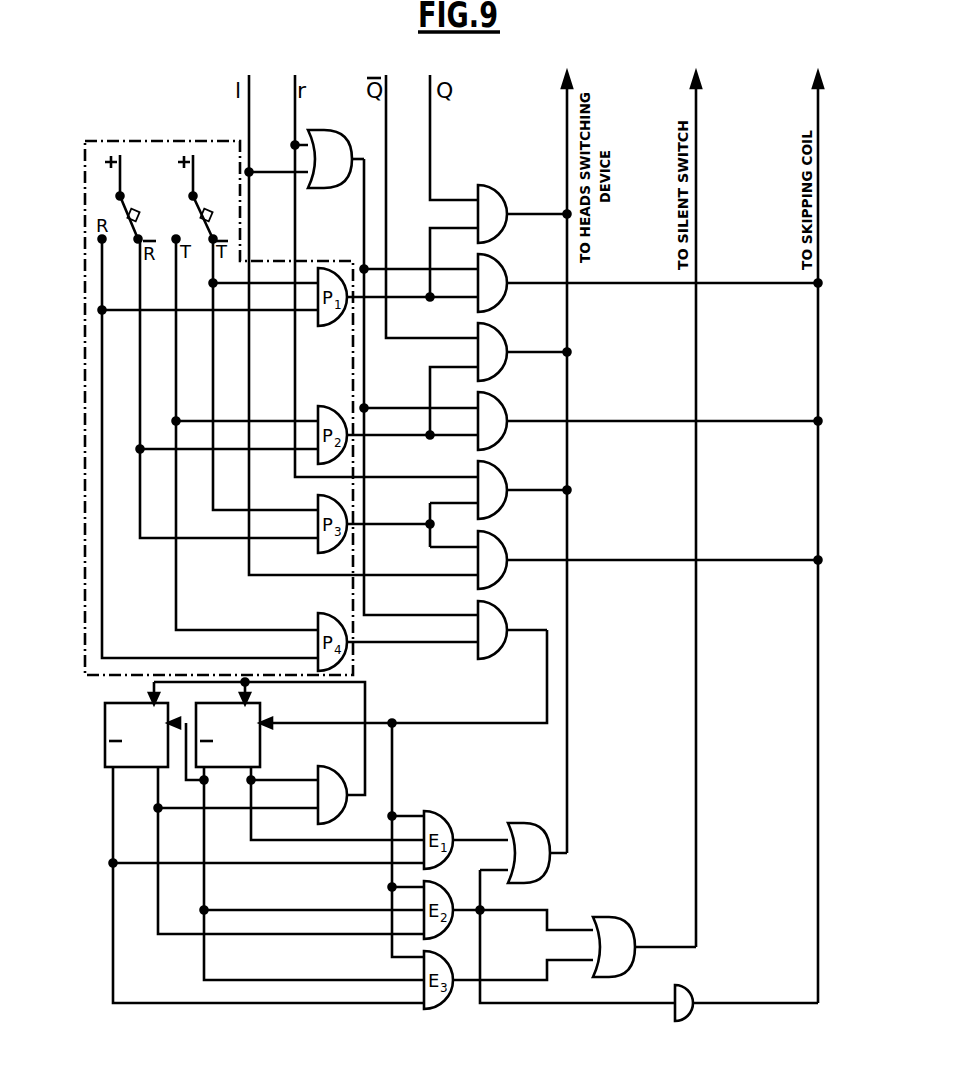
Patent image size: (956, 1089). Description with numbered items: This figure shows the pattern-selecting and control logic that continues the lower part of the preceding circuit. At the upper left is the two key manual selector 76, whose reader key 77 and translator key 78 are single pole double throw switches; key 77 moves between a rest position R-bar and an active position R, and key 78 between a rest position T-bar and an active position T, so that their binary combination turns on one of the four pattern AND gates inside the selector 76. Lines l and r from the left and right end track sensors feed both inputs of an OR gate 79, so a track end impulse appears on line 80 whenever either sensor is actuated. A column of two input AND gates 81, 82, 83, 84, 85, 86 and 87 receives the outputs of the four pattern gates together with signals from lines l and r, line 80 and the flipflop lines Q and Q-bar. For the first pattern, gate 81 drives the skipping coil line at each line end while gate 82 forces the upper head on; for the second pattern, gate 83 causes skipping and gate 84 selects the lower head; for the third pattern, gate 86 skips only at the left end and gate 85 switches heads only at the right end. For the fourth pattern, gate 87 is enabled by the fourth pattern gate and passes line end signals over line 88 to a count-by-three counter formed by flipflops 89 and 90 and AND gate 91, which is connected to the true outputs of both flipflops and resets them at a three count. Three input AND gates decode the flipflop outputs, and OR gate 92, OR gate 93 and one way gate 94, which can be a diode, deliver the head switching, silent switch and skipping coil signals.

The two key manual selector 76 is at (168, 141).
The reader key 77 is at (129, 205).
The translator key 78 is at (203, 205).
The OR gate 79 is at (327, 178).
The line 80 is at (364, 240).
The AND gate 81 is at (497, 291).
The AND gate 82 is at (497, 222).
The AND gate 83 is at (497, 431).
The AND gate 84 is at (497, 362).
The AND gate 85 is at (497, 500).
The AND gate 86 is at (497, 570).
The AND gate 87 is at (496, 640).
The line 88 is at (458, 722).
The flipflop 89 is at (250, 737).
The flipflop 90 is at (117, 722).
The AND gate 91 is at (333, 786).
The OR gate 92 is at (541, 868).
The OR gate 93 is at (618, 925).
The one way gate 94 is at (686, 993).